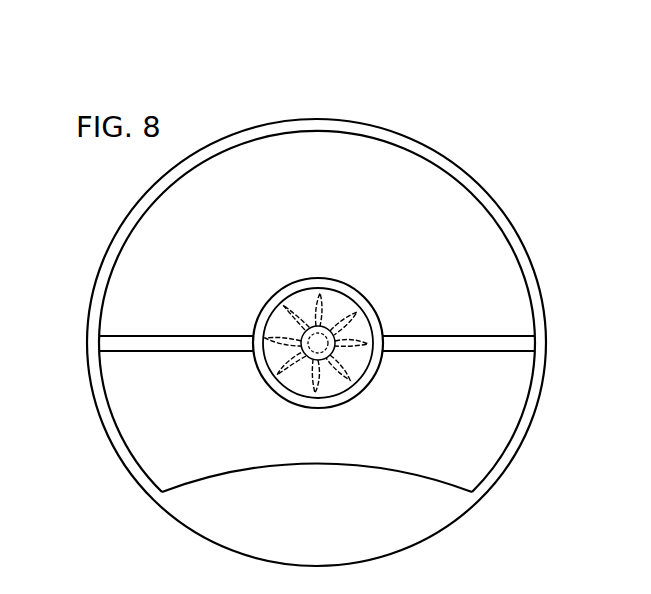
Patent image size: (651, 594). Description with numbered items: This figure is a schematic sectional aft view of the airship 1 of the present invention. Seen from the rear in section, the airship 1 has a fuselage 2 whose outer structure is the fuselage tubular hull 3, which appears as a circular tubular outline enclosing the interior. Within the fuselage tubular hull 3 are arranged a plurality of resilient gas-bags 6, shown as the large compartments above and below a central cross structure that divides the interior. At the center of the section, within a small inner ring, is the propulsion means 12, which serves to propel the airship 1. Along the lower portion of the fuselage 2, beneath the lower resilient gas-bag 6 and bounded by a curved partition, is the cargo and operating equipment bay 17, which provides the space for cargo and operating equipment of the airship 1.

The airship 1 is at (335, 307).
The fuselage 2 is at (356, 332).
The fuselage tubular hull 3 is at (458, 165).
The resilient gas-bags 6 is at (423, 242).
The propulsion means 12 is at (302, 336).
The cargo & operating equipment bay 17 is at (322, 524).